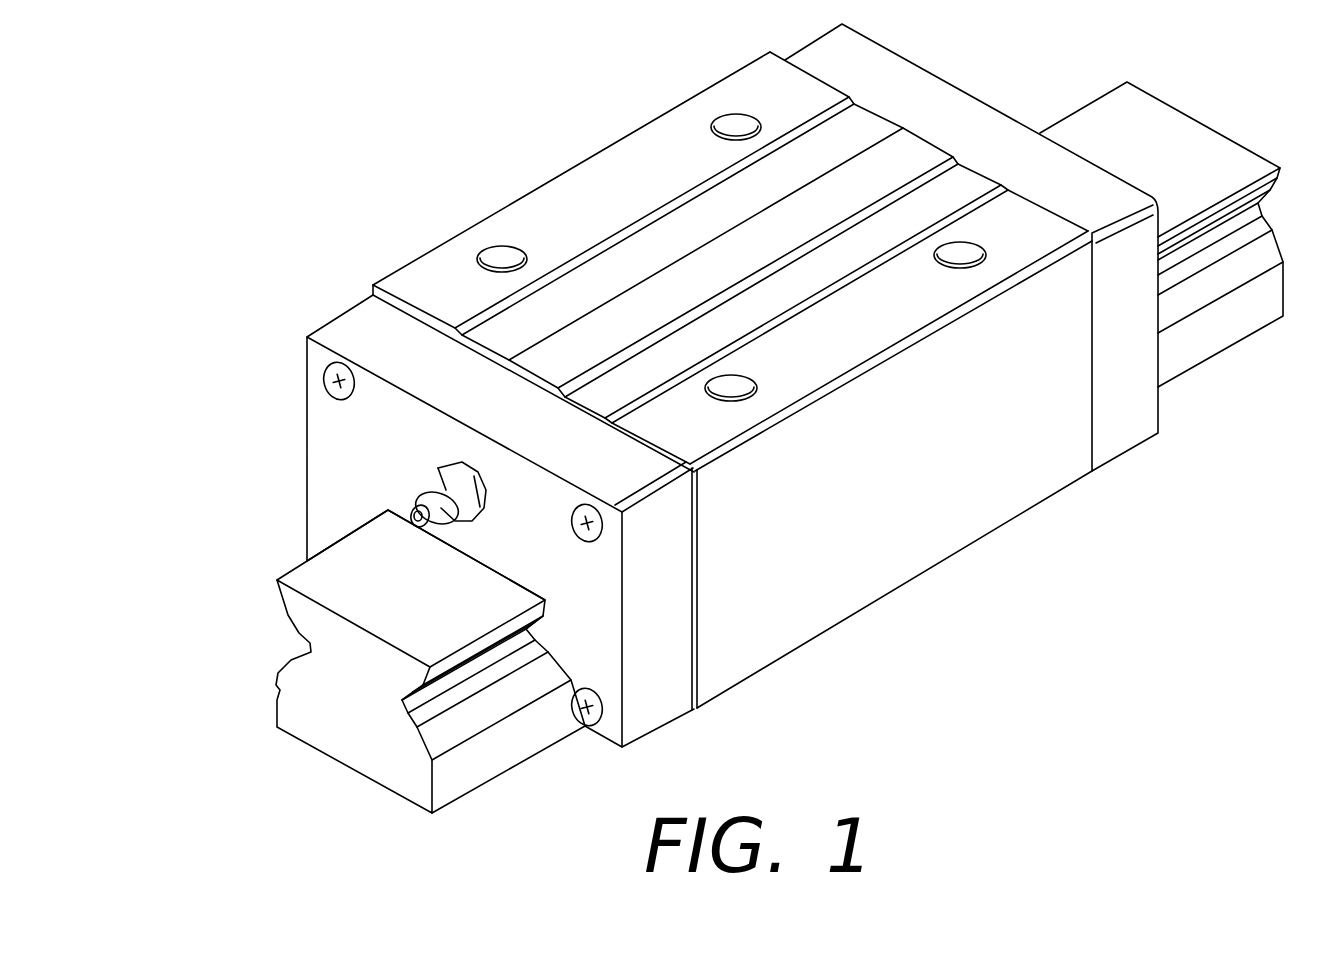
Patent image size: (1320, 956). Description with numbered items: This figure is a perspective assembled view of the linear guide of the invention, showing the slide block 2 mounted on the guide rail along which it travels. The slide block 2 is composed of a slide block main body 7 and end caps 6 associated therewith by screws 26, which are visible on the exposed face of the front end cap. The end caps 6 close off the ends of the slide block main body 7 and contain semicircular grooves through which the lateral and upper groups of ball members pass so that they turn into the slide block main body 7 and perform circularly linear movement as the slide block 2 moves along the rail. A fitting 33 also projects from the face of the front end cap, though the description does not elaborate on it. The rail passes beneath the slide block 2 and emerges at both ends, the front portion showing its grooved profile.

The slide block 2 is at (828, 366).
The end caps 6 is at (367, 328).
The slide block main body 7 is at (492, 257).
The screws 26 is at (325, 376).
The lubrication nipple 33 is at (435, 490).